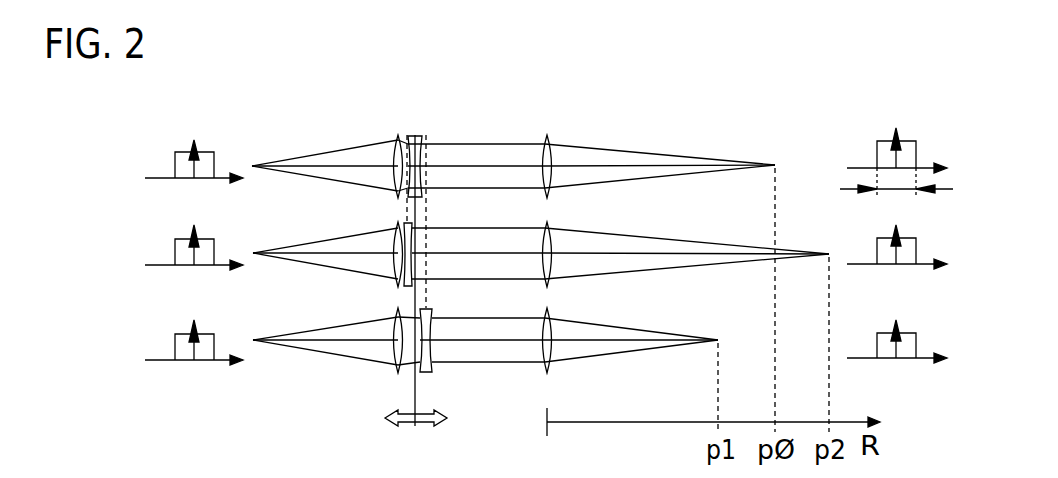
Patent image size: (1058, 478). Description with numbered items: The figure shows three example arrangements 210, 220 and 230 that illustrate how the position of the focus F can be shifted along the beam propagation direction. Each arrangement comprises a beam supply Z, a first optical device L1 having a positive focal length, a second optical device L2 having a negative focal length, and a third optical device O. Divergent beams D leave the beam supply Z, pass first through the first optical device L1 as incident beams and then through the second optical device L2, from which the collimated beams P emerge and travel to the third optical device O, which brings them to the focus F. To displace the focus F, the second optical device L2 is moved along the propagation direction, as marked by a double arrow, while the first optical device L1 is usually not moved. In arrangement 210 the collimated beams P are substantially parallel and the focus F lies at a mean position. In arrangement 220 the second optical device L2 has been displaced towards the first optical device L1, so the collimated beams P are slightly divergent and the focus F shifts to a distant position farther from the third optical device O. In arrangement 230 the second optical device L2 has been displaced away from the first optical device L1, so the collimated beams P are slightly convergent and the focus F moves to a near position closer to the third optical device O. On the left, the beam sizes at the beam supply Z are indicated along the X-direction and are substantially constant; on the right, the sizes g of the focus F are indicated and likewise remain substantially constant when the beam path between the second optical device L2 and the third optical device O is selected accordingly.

The arrangement 210 is at (138, 153).
The arrangement 220 is at (138, 240).
The arrangement 230 is at (138, 334).
The beam supply Z is at (252, 162).
The divergent beams D is at (338, 150).
The first optical device L1 is at (396, 138).
The second optical device L2 is at (418, 135).
The collimated beams P is at (487, 145).
The third optical device O is at (548, 135).
The focus F is at (773, 164).
The size of the focus g is at (907, 192).